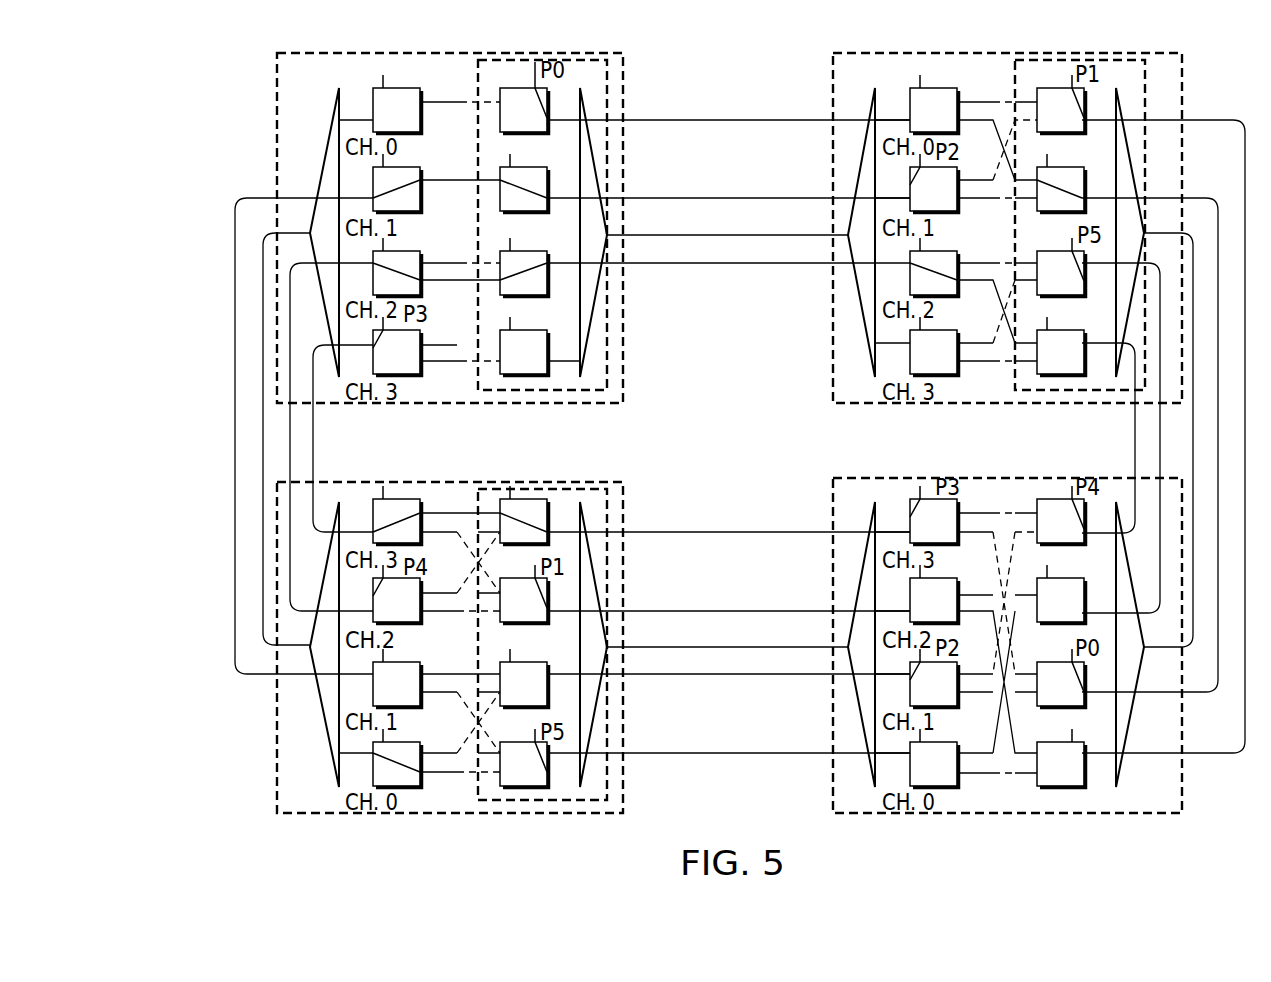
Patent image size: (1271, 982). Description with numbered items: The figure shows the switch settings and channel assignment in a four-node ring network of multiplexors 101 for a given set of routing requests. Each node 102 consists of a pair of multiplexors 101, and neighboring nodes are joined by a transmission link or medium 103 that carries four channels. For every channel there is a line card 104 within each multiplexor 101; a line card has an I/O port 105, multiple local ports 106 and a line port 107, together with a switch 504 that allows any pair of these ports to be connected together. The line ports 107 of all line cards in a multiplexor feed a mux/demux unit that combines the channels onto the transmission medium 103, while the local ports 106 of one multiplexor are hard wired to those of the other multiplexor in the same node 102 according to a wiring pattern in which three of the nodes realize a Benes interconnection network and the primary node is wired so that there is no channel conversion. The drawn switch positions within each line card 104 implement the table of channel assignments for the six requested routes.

The multiplexor 101 is at (614, 170).
The node 102 is at (277, 145).
The transmission link or medium 103 is at (728, 436).
The line card 104 is at (1031, 82).
The I/O port 105 is at (1065, 730).
The local port 106 is at (986, 526).
The line port 107 is at (893, 112).
The switch 504 is at (381, 776).